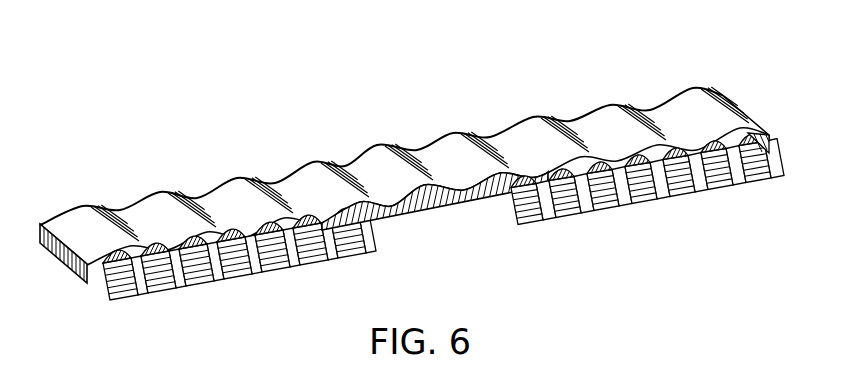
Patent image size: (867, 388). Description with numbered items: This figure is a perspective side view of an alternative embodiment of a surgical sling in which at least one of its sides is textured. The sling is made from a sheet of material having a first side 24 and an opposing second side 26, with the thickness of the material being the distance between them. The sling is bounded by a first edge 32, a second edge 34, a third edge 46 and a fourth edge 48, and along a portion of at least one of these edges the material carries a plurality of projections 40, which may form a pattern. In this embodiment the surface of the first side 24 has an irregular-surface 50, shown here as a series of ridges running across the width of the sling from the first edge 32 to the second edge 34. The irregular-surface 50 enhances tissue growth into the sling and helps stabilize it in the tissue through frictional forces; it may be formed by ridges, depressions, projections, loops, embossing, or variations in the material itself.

The first side 24 is at (411, 180).
The second side 26 is at (377, 228).
The first edge 32 is at (82, 202).
The second edge 34 is at (100, 297).
The projections 40 is at (238, 177).
The third edge 46 is at (55, 256).
The fourth edge 48 is at (743, 130).
The irregular-surface 50 is at (567, 124).